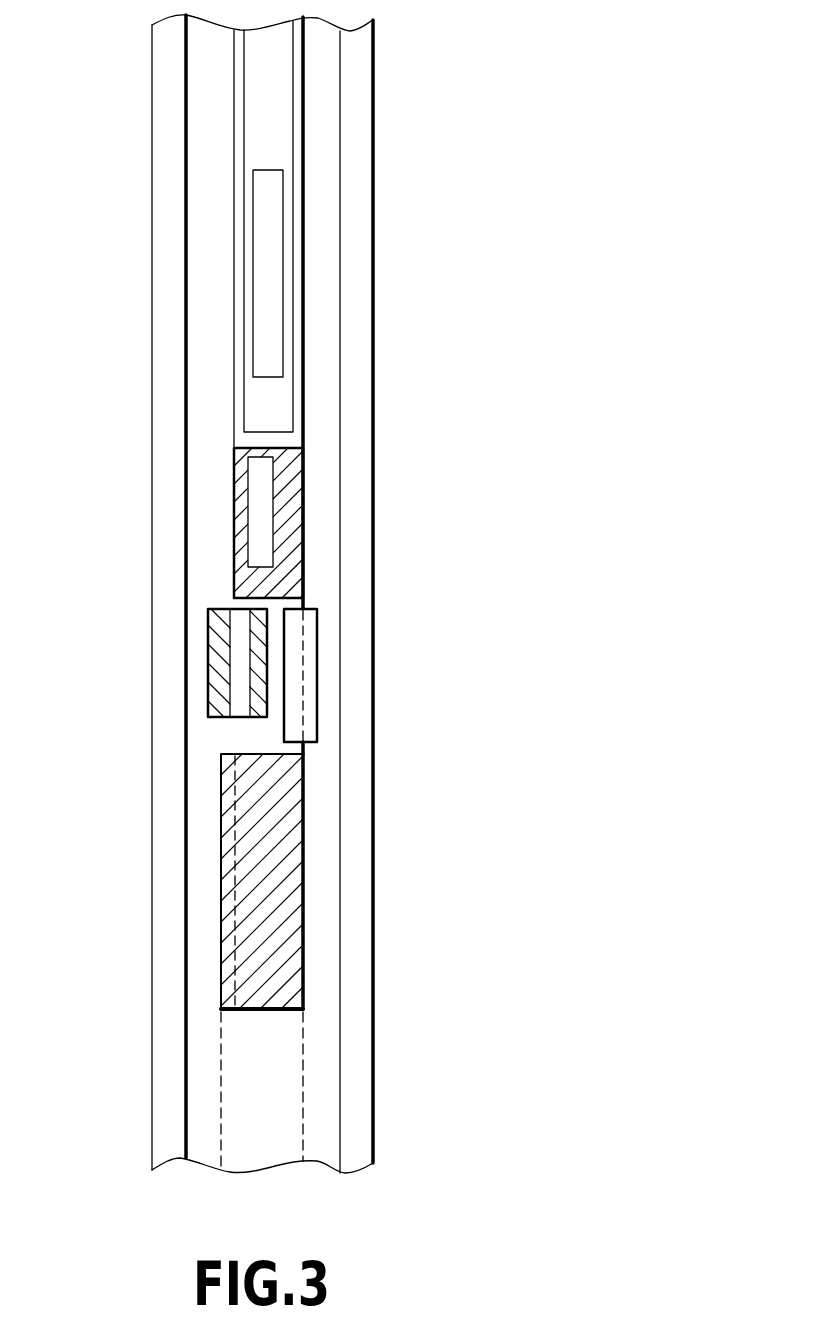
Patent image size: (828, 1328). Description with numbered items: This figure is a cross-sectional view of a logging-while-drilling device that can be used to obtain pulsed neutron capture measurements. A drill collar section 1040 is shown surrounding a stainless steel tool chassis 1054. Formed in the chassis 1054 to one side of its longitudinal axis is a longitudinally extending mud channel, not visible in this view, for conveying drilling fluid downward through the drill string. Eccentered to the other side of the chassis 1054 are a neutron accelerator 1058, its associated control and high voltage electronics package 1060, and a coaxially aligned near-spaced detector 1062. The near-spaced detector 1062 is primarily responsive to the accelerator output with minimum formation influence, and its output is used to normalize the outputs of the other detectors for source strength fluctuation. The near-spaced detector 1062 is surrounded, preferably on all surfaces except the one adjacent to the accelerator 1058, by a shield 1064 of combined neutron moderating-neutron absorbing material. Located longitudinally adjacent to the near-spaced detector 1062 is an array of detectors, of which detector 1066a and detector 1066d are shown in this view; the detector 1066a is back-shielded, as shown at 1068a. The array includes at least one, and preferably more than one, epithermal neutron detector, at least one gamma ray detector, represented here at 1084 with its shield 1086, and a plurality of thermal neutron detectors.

The drill collar section 1040 is at (170, 268).
The tool chassis 1054 is at (318, 328).
The neutron accelerator 1058 is at (268, 268).
The control and high voltage electronics package 1060 is at (270, 115).
The near-spaced detector 1062 is at (265, 520).
The shield 1064 is at (295, 540).
The detector 1066a is at (242, 662).
The detector 1066d is at (292, 692).
The back shield 1068a is at (222, 635).
The gamma ray detector 1084 is at (218, 1093).
The shield 1086 is at (242, 888).